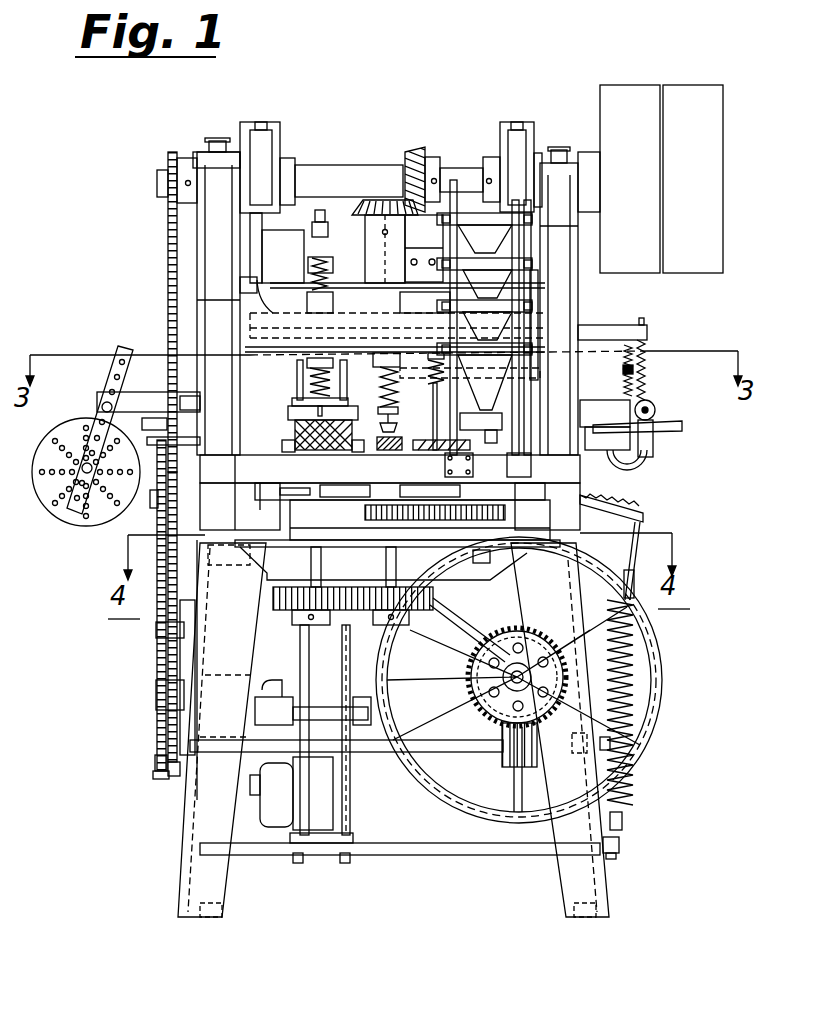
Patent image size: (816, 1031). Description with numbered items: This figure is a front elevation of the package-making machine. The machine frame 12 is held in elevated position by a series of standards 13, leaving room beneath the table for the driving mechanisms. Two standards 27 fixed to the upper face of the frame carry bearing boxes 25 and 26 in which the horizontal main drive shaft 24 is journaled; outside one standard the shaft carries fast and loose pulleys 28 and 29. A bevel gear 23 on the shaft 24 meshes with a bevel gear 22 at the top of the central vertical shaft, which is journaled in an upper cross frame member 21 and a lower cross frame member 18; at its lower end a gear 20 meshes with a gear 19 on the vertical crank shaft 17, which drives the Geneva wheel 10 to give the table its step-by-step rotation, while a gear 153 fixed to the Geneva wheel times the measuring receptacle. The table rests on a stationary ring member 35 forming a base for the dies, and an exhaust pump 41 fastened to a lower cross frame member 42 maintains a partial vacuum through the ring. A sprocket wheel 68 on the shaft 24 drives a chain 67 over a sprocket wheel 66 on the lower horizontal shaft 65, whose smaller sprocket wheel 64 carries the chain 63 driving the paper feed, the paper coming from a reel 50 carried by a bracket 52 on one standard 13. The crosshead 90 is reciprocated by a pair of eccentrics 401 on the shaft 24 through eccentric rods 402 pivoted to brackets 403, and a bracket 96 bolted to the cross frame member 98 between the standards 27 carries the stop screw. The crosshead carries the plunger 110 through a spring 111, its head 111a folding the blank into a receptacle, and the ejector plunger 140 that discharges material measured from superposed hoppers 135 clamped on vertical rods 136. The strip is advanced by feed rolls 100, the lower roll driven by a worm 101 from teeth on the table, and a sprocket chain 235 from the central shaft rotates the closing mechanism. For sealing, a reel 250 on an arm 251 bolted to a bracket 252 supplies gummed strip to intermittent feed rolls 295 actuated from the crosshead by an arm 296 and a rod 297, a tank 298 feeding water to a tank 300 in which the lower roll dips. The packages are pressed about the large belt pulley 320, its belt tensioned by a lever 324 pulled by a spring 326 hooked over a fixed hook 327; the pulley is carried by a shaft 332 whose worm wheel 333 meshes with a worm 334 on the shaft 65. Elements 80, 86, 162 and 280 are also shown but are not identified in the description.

The Geneva wheel 10 is at (362, 488).
The machine frame 12 is at (390, 492).
The standards 13 is at (393, 728).
The vertical shaft 17 is at (312, 626).
The cross frame member 18 is at (397, 563).
The gear 19 is at (296, 626).
The gear 20 is at (434, 599).
The cross frame member 21 is at (412, 258).
The bevel gear 22 is at (375, 199).
The bevel gear 23 is at (412, 150).
The horizontal shaft 24 is at (302, 175).
The bearing box 25 is at (211, 152).
The bearing box 26 is at (562, 147).
The standards 27 is at (213, 325).
The fast pulley 28 is at (630, 179).
The loose pulley 29 is at (693, 179).
The ring member 35 is at (488, 465).
The exhaust pump 41 is at (283, 824).
The cross frame member 42 is at (388, 855).
The reel 50 is at (333, 730).
The bracket 52 is at (272, 692).
The chain 63 is at (156, 640).
The sprocket wheel 64 is at (155, 764).
The horizontal shaft 65 is at (268, 752).
The sprocket wheel 66 is at (172, 778).
The chain 67 is at (168, 274).
The sprocket wheel 68 is at (166, 155).
The bracket 80 is at (307, 362).
The spring 86 is at (297, 380).
The crosshead 90 is at (395, 317).
The bracket 96 is at (330, 228).
The cross frame member 98 is at (282, 258).
The feed rolls 100 is at (295, 425).
The worm 101 is at (386, 452).
The plunger 110 is at (410, 355).
The spring 111 is at (380, 380).
The head 111a is at (380, 423).
The hoppers 135 is at (484, 317).
The vertical rods 136 is at (549, 336).
The plunger 140 is at (432, 452).
The gear 153 is at (378, 516).
The box 162 is at (481, 428).
The sprocket chain 235 is at (425, 303).
The reel 250 is at (62, 500).
The arm 251 is at (112, 378).
The bracket 252 is at (140, 402).
The spring 280 is at (423, 401).
The feed rolls 295 is at (655, 410).
The arm 296 is at (620, 324).
The rod 297 is at (647, 383).
The tank 298 is at (604, 453).
The tank 300 is at (670, 437).
The belt pulley 320 is at (660, 636).
The lever 324 is at (629, 511).
The spring 326 is at (634, 690).
The fixed hook 327 is at (622, 822).
The shaft 332 is at (507, 680).
The worm wheel 333 is at (471, 672).
The worm 334 is at (508, 762).
The eccentrics 401 is at (278, 140).
The eccentric rods 402 is at (260, 249).
The brackets 403 is at (339, 303).